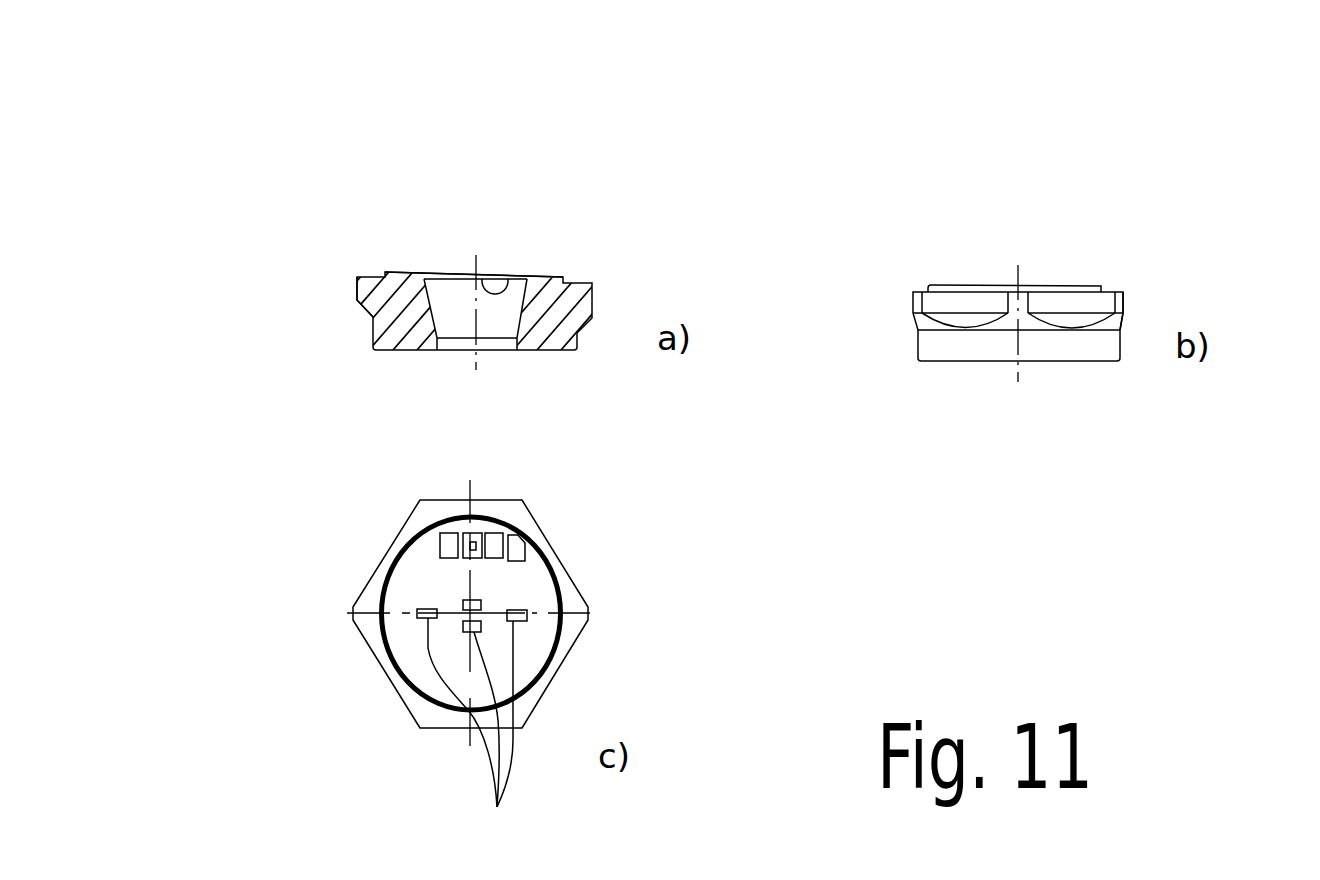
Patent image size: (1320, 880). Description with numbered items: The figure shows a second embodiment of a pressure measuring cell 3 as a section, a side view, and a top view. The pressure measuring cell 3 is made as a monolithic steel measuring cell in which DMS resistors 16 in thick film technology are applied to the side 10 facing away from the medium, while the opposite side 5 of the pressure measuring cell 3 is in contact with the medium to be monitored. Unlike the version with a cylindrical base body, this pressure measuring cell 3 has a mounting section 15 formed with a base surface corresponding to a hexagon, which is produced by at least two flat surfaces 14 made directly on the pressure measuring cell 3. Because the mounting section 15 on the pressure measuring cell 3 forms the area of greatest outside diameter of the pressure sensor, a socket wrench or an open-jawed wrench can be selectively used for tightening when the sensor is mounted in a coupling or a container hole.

The pressure measuring cell 3 is at (359, 223).
The side of the pressure measuring cell 5 is at (516, 278).
The side facing away from the medium 10 is at (578, 282).
The flat surfaces 14 is at (975, 307).
The mounting section 15 is at (315, 313).
The thick film DMS resistors 16 is at (473, 733).